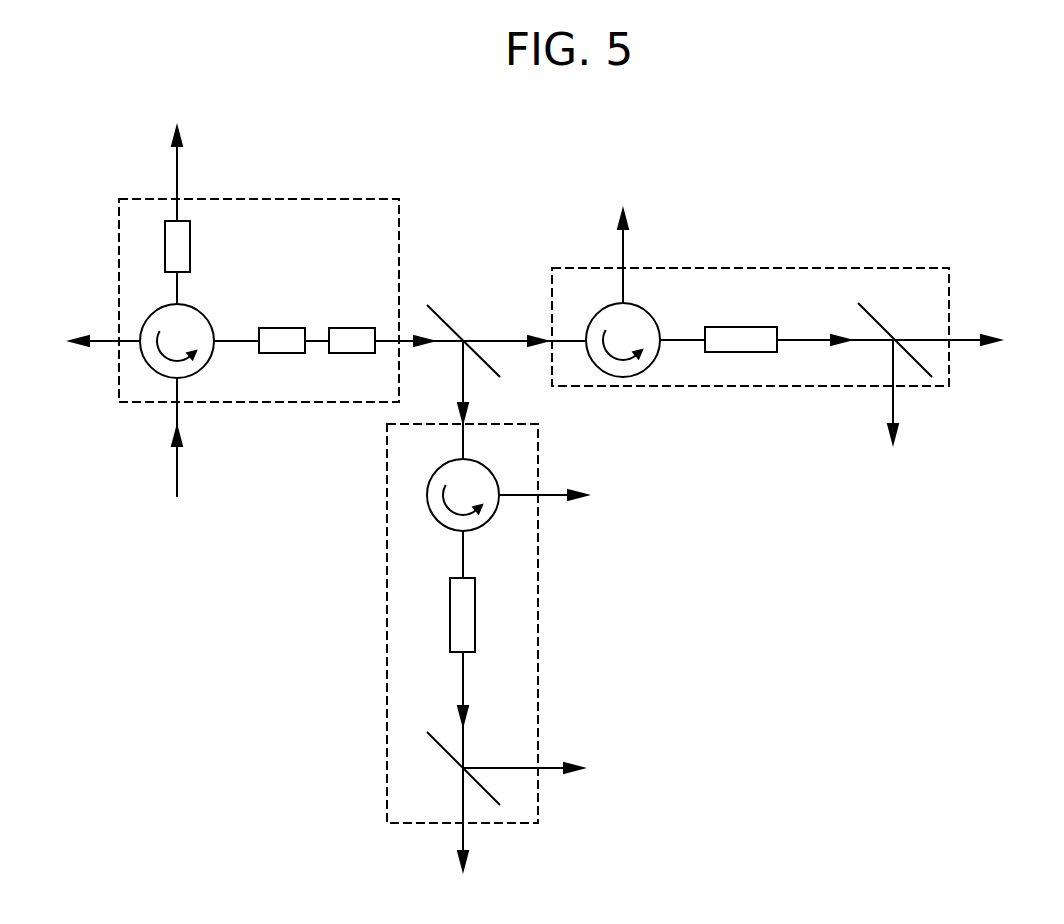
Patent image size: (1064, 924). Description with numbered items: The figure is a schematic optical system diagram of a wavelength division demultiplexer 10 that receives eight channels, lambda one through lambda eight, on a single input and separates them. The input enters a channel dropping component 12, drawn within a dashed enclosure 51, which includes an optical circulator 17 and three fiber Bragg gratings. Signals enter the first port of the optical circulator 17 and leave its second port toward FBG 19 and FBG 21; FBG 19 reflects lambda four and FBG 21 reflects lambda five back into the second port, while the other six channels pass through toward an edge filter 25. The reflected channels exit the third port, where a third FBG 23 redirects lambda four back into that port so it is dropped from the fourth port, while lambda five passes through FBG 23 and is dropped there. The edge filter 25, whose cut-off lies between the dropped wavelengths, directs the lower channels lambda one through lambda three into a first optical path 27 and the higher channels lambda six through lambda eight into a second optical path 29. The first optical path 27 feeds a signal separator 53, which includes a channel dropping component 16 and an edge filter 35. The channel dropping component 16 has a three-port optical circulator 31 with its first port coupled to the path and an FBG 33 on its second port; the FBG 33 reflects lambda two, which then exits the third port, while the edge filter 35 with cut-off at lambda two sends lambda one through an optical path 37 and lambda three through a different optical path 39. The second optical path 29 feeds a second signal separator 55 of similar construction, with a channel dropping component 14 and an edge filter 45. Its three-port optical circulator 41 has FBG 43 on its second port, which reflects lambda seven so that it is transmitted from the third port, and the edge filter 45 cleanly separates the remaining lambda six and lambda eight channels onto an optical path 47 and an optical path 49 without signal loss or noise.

The wavelength division demultiplexer 10 is at (456, 137).
The channel dropping component 12 is at (312, 255).
The channel dropping component 14 is at (800, 283).
The channel dropping component 16 is at (521, 661).
The optical circulator 17 is at (168, 378).
The fiber Bragg grating 19 is at (288, 328).
The fiber Bragg grating 21 is at (352, 353).
The fiber Bragg grating 23 is at (165, 242).
The edge filter 25 is at (445, 320).
The first optical path 27 is at (463, 363).
The second optical path 29 is at (513, 340).
The three-port optical circulator 31 is at (433, 481).
The fiber Bragg grating 33 is at (450, 628).
The edge filter 35 is at (440, 746).
The optical path 37 is at (463, 795).
The optical path 39 is at (510, 769).
The three-port optical circulator 41 is at (634, 378).
The fiber Bragg grating 43 is at (748, 352).
The edge filter 45 is at (870, 310).
The optical path 47 is at (893, 392).
The optical path 49 is at (935, 339).
The channel dropping component enclosure 51 is at (316, 198).
The signal separator 53 is at (387, 536).
The second signal separator 55 is at (580, 268).